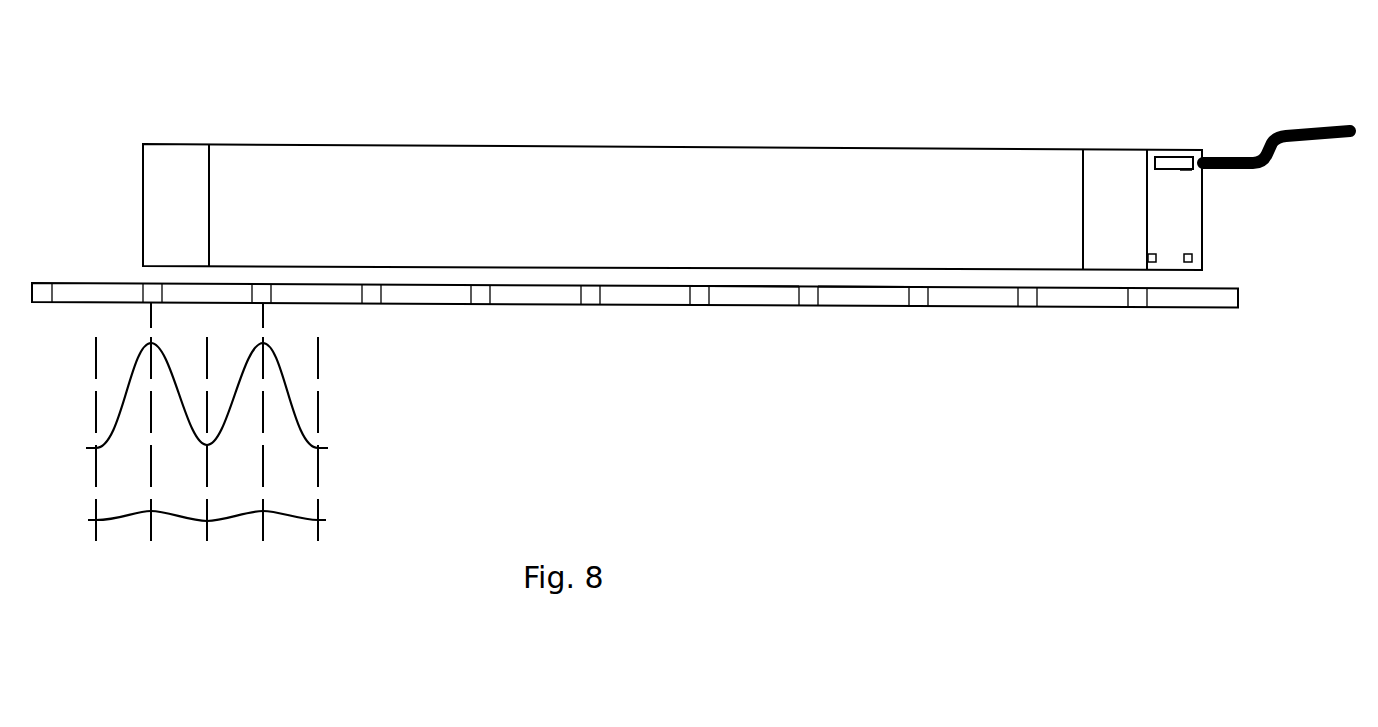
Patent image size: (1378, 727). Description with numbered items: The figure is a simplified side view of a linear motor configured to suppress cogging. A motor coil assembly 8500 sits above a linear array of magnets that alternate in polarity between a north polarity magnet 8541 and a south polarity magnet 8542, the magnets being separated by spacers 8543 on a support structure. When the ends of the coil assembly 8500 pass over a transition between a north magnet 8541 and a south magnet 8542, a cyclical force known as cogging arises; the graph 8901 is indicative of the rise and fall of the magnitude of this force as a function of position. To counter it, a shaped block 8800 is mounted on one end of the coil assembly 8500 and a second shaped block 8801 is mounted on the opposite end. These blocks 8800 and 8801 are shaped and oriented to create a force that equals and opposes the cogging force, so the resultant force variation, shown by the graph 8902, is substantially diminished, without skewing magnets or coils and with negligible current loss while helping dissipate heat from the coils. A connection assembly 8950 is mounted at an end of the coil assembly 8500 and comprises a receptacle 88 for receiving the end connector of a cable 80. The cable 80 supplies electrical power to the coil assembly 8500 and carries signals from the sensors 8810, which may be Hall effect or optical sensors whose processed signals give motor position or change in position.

The motor coil assembly 8500 is at (487, 145).
The shaped block 8800 is at (172, 163).
The shaped block 8801 is at (1107, 168).
The connection assembly 8950 is at (1178, 149).
The cable 80 is at (1320, 118).
The sensors 8810 is at (1188, 258).
The receptacle 88 is at (1178, 173).
The north polarity magnet 8541 is at (883, 307).
The south polarity magnet 8542 is at (767, 307).
The spacers 8543 is at (702, 302).
The graph 8901 is at (296, 407).
The graph 8902 is at (300, 517).